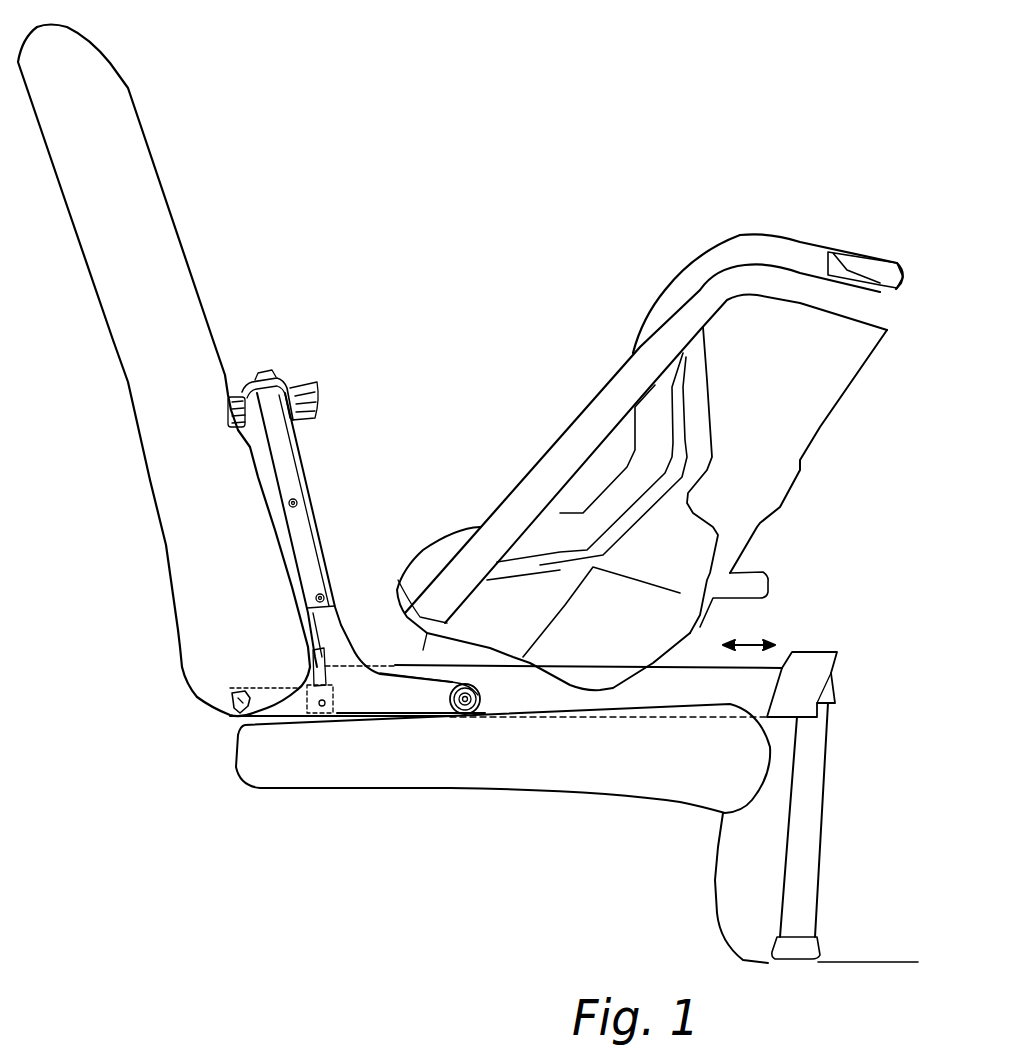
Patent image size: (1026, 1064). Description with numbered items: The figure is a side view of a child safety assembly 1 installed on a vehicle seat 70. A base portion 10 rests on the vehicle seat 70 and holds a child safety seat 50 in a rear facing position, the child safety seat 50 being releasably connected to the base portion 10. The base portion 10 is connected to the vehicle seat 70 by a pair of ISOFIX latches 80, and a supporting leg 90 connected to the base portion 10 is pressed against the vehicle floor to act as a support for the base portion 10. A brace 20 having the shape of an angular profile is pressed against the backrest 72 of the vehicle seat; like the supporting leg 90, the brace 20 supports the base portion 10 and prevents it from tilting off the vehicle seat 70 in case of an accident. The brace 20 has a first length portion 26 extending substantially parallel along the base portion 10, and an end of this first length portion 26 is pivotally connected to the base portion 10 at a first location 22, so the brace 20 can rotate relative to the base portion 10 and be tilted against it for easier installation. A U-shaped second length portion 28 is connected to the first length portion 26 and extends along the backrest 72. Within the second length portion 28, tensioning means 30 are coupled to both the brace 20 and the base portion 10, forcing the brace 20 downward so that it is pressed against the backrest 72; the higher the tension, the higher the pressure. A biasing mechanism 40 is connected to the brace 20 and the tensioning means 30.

The child safety assembly 1 is at (415, 506).
The base portion 10 is at (768, 682).
The brace 20 is at (354, 537).
The first location 22 is at (478, 720).
The first length portion 26 is at (400, 695).
The second length portion 28 is at (292, 542).
The tensioning means 30 is at (312, 665).
The biasing mechanism 40 is at (272, 380).
The child safety seat 50 is at (778, 443).
The vehicle seat 70 is at (287, 763).
The backrest 72 is at (178, 460).
The ISOFIX latches 80 is at (280, 705).
The supporting leg 90 is at (810, 833).